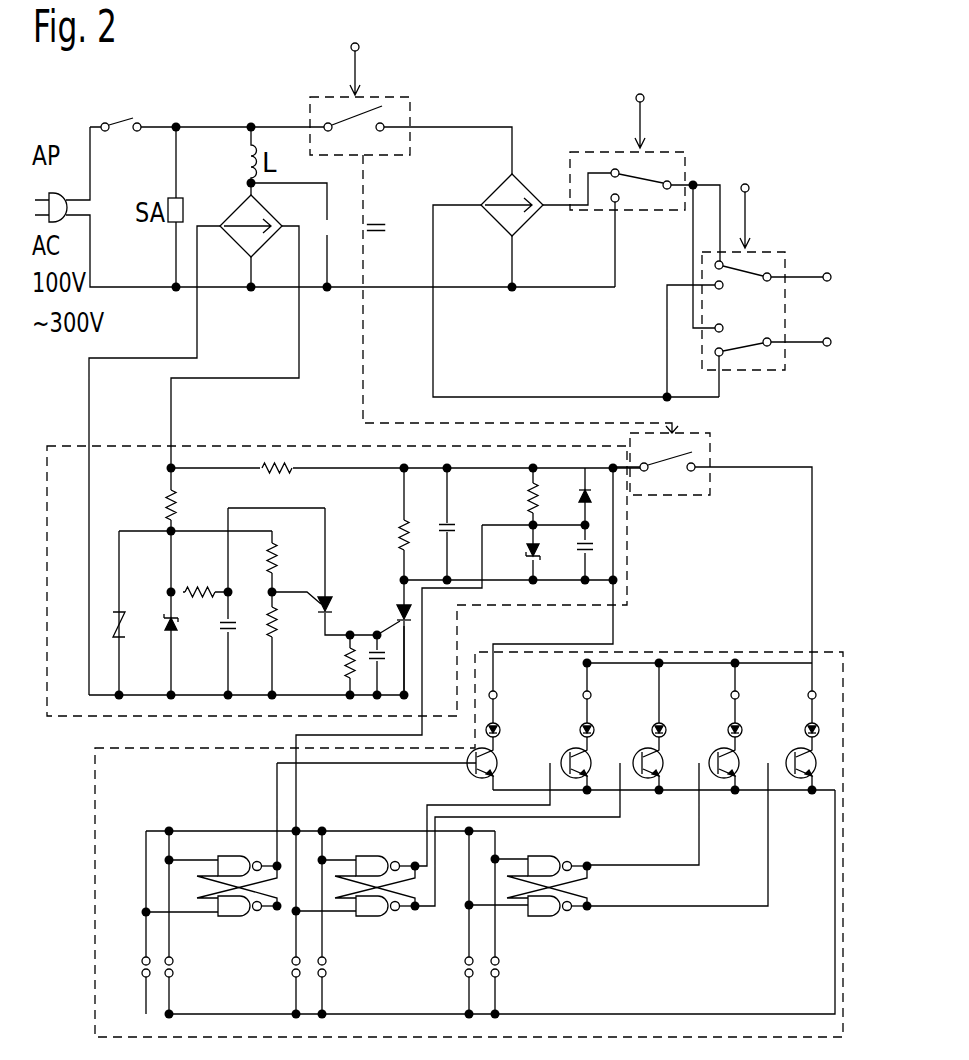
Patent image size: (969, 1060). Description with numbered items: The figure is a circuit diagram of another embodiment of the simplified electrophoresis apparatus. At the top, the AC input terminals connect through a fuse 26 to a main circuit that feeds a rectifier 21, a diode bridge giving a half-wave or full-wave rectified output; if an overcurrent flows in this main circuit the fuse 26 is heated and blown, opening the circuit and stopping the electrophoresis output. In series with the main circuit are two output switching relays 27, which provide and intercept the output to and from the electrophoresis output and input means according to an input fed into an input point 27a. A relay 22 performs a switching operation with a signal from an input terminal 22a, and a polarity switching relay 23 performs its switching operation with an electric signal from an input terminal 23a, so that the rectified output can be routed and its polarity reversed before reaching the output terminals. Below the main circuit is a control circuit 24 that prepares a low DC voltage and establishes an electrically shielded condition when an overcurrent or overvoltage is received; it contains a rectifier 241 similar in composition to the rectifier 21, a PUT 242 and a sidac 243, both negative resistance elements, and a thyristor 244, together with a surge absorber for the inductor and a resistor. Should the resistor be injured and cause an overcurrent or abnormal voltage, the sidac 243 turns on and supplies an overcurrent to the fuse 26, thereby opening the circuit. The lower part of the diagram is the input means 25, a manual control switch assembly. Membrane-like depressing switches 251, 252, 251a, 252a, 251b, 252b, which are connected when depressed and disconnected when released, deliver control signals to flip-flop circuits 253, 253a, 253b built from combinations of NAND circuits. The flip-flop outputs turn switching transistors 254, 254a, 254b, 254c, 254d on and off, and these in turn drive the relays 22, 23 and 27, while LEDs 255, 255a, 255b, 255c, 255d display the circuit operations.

The rectifier 21 is at (497, 185).
The relay 22 is at (660, 196).
The input terminal 22a is at (648, 100).
The polarity switching relay 23 is at (774, 293).
The input terminal 23a is at (765, 195).
The control circuit 24 is at (80, 722).
The rectifier 241 is at (240, 194).
The PUT 242 is at (325, 597).
The sidac 243 is at (128, 620).
The thyristor 244 is at (398, 618).
The input means 25 is at (95, 838).
The depressing switch 251 is at (141, 968).
The depressing switch 251a is at (292, 968).
The depressing switch 251b is at (465, 963).
The depressing switch 252 is at (173, 966).
The depressing switch 252a is at (326, 968).
The depressing switch 252b is at (498, 968).
The flip-flop circuit 253 is at (222, 918).
The flip-flop circuit 253a is at (360, 918).
The flip-flop circuit 253b is at (540, 915).
The switching transistor 254 is at (466, 771).
The switching transistor 254a is at (597, 778).
The switching transistor 254b is at (669, 778).
The switching transistor 254c is at (747, 778).
The switching transistor 254d is at (800, 786).
The LED 255 is at (502, 735).
The LED 255a is at (589, 718).
The LED 255b is at (661, 718).
The LED 255c is at (737, 718).
The LED 255d is at (818, 700).
The fuse 26 is at (128, 125).
The output switching relay 27 is at (392, 97).
The input point 27a is at (351, 48).